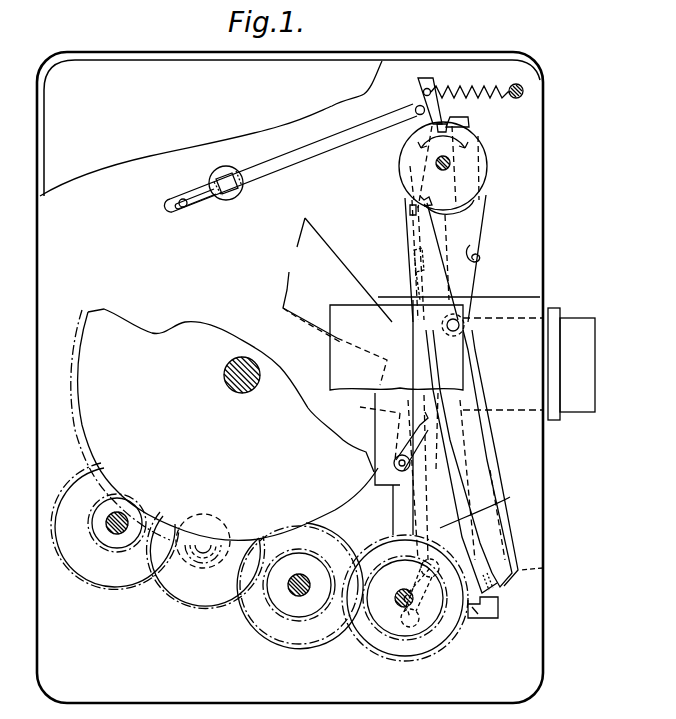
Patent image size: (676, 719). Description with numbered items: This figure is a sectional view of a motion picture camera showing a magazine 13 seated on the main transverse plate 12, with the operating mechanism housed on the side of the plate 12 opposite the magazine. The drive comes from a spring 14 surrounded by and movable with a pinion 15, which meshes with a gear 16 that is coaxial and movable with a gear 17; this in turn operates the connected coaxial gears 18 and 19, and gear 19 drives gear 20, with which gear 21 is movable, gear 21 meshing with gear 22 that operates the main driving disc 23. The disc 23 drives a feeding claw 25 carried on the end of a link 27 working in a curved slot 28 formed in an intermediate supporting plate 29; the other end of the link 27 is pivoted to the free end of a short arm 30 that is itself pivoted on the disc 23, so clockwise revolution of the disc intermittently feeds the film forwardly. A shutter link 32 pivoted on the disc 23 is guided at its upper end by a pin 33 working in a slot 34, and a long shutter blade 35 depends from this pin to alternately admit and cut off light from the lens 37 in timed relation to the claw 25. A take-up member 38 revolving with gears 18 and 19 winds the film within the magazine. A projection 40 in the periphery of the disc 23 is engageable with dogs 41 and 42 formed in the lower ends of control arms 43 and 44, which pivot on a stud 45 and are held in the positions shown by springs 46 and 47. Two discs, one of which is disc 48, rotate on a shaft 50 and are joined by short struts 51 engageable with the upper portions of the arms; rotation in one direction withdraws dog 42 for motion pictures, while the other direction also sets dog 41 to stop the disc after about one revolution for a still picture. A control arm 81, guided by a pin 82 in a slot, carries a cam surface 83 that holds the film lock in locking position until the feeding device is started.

The main transverse plate 12 is at (290, 377).
The magazine 13 is at (211, 128).
The spring 14 is at (228, 425).
The pinion 15 is at (78, 412).
The gear 16 is at (92, 521).
The gear 17 is at (75, 580).
The gear 18 is at (201, 562).
The gear 19 is at (195, 607).
The gear 20 is at (270, 610).
The gear 21 is at (297, 648).
The gear 22 is at (380, 633).
The driving disc 23 is at (437, 647).
The feeding claw 25 is at (375, 409).
The link 27 is at (400, 512).
The curved slot 28 is at (415, 432).
The intermediate supporting plate 29 is at (396, 468).
The short arm 30 is at (462, 596).
The link 32 is at (520, 492).
The pin 33 is at (407, 206).
The slot 34 is at (404, 195).
The shutter blade 35 is at (410, 230).
The lens 37 is at (571, 364).
The take-up member 38 is at (207, 515).
The projection 40 is at (498, 605).
The dog 41 is at (545, 566).
The dog 42 is at (483, 616).
The control arm 43 is at (457, 212).
The control arm 44 is at (430, 78).
The stud 45 is at (461, 330).
The spring 46 is at (480, 88).
The spring 47 is at (478, 248).
The disc 48 is at (474, 148).
The shaft 50 is at (451, 164).
The struts 51 is at (444, 122).
The control arm 81 is at (288, 167).
The pin 82 is at (184, 208).
The cam surface 83 is at (232, 197).